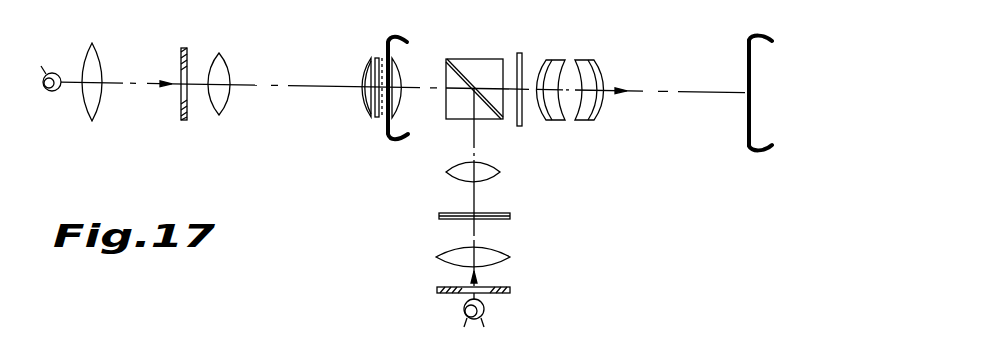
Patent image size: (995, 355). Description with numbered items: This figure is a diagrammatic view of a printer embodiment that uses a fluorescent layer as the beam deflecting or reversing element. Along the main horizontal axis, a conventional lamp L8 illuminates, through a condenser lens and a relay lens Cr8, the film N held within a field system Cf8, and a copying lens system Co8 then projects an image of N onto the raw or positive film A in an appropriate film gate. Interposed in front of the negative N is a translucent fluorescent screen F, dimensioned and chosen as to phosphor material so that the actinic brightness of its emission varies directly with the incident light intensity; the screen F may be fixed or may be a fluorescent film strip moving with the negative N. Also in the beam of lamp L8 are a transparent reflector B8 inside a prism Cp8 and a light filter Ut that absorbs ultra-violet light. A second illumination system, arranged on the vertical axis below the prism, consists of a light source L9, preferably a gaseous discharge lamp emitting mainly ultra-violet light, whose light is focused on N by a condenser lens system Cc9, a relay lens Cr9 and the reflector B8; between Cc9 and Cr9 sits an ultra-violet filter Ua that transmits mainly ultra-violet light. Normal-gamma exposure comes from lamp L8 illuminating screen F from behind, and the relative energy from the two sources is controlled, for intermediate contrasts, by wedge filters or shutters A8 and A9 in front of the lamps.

The lamp L8 is at (52, 91).
The copying lens system Co8 is at (93, 66).
The wedge filter or shutter A8 is at (183, 114).
The relay lens Cr8 is at (250, 56).
The field system Cf8 is at (361, 70).
The translucent fluorescent screen F is at (377, 110).
The film (negative) N is at (395, 42).
The prism Cp8 is at (488, 62).
The transparent reflector B8 is at (468, 49).
The light filter (minus ultraviolet filter) Ut is at (519, 127).
The raw or positive film A is at (744, 67).
The relay lens Cr9 is at (497, 172).
The ultra-violet filter Ua is at (510, 215).
The condenser lens system Cc9 is at (505, 258).
The wedge filter or shutter A9 is at (437, 290).
The light source (gaseous discharge lamp) L9 is at (484, 305).